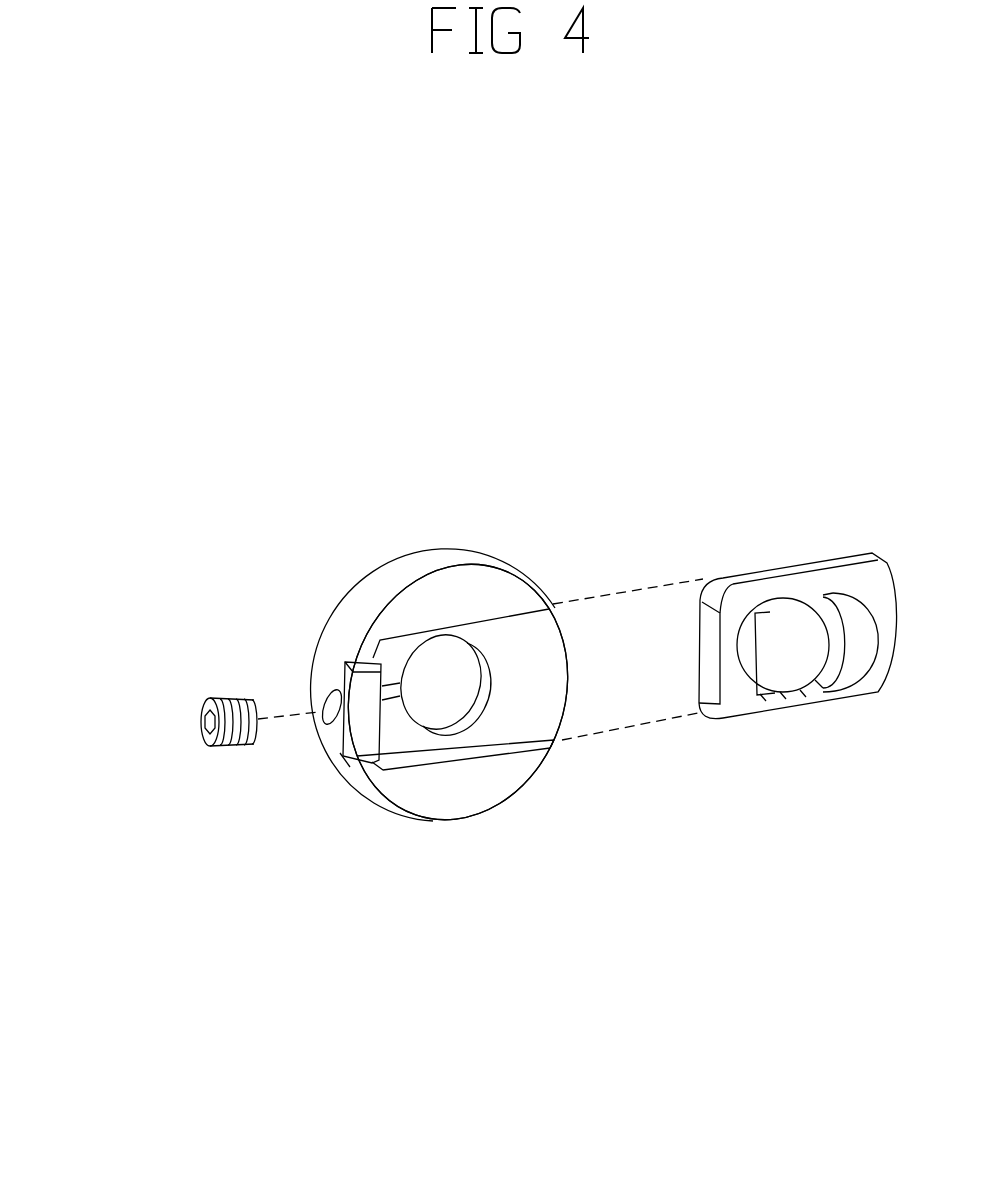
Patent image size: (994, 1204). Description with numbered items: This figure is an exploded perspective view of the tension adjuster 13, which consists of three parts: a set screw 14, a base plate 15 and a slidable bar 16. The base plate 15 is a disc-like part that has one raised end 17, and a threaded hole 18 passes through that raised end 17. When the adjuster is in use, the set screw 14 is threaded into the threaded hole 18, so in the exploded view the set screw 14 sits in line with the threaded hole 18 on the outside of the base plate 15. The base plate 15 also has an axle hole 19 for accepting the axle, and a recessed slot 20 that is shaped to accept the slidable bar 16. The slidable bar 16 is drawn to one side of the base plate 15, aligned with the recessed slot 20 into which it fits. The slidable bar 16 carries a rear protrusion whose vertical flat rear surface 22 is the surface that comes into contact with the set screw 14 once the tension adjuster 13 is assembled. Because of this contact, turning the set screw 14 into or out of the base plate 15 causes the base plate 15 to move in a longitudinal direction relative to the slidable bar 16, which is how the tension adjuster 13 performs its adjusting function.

The tension adjuster 13 is at (470, 286).
The set screw 14 is at (177, 666).
The base plate 15 is at (507, 791).
The slidable bar 16 is at (754, 773).
The raised end 17 is at (379, 813).
The threaded hole 18 is at (211, 802).
The axle hole 19 is at (513, 582).
The recessed slot 20 is at (458, 783).
The flat rear surface 22 is at (662, 798).